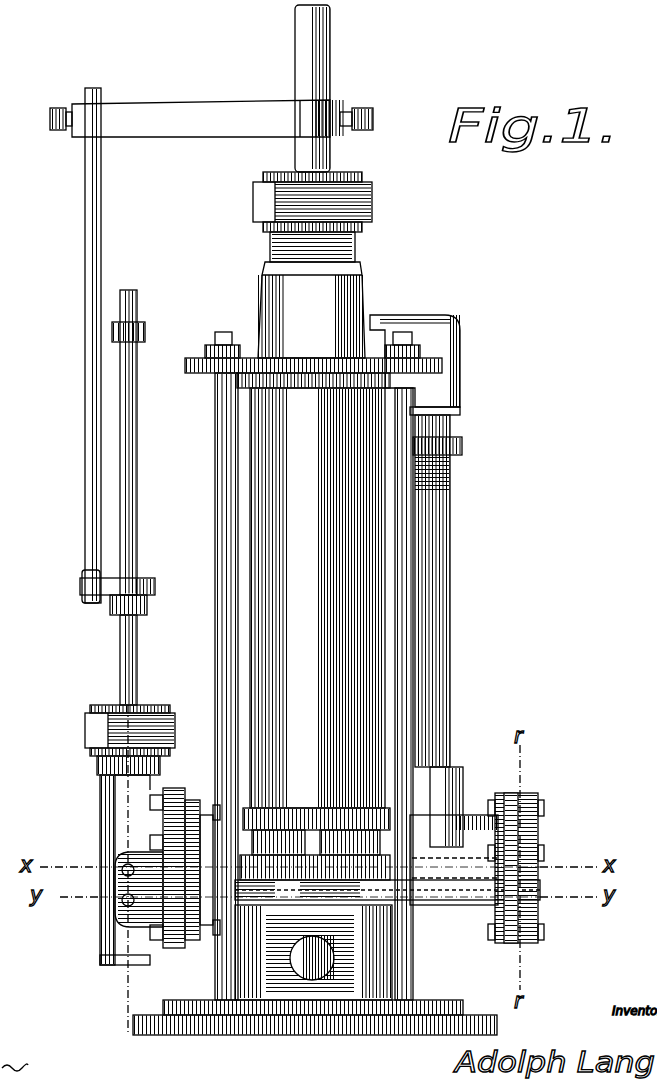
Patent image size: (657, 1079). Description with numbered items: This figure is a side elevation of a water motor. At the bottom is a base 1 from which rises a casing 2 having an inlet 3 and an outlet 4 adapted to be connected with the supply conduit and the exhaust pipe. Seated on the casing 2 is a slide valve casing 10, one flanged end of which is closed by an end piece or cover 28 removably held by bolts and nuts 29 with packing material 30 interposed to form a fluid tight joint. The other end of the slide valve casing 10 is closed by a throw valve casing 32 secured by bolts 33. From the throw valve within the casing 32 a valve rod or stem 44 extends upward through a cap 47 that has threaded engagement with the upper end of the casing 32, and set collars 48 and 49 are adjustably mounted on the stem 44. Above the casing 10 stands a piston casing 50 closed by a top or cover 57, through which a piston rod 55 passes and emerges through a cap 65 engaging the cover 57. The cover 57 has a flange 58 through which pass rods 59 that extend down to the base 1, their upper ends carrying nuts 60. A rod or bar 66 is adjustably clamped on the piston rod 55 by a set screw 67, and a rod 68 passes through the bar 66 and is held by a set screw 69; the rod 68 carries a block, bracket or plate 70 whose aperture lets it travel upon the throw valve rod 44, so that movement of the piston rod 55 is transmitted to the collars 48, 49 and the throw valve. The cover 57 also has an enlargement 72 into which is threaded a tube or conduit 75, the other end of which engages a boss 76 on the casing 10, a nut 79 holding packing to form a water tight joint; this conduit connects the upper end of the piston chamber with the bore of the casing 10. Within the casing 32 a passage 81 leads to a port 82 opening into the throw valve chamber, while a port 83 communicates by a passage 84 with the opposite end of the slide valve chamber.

The base 1 is at (437, 1015).
The casing 2 is at (265, 960).
The inlet 3 is at (120, 654).
The outlet 4 is at (311, 968).
The slide valve casing 10 is at (454, 860).
The end piece or cover 28 is at (518, 838).
The bolts and nuts 29 is at (538, 804).
The packing material 30 is at (540, 862).
The throw valve casing 32 is at (113, 796).
The bolts 33 is at (160, 798).
The valve rod or stem 44 is at (126, 469).
The cap 47 is at (85, 731).
The set collar 48 is at (147, 606).
The set collar 49 is at (145, 332).
The piston casing 50 is at (316, 609).
The piston rod 55 is at (312, 55).
The top or cover 57 is at (311, 295).
The flange 58 is at (206, 373).
The rods 59 is at (215, 493).
The nuts 60 is at (205, 349).
The cap 65 is at (258, 199).
The rod or bar 66 is at (208, 118).
The bolt or set screw 67 is at (374, 118).
The rod 68 is at (85, 446).
The set screw 69 is at (50, 117).
The block, bracket or plate 70 is at (92, 587).
The enlargement 72 is at (452, 332).
The tube or conduit 75 is at (450, 616).
The boss 76 is at (462, 787).
The nut 79 is at (462, 443).
The passage 81 is at (284, 858).
The port 82 is at (126, 862).
The port 83 is at (126, 897).
The passage 84 is at (300, 900).